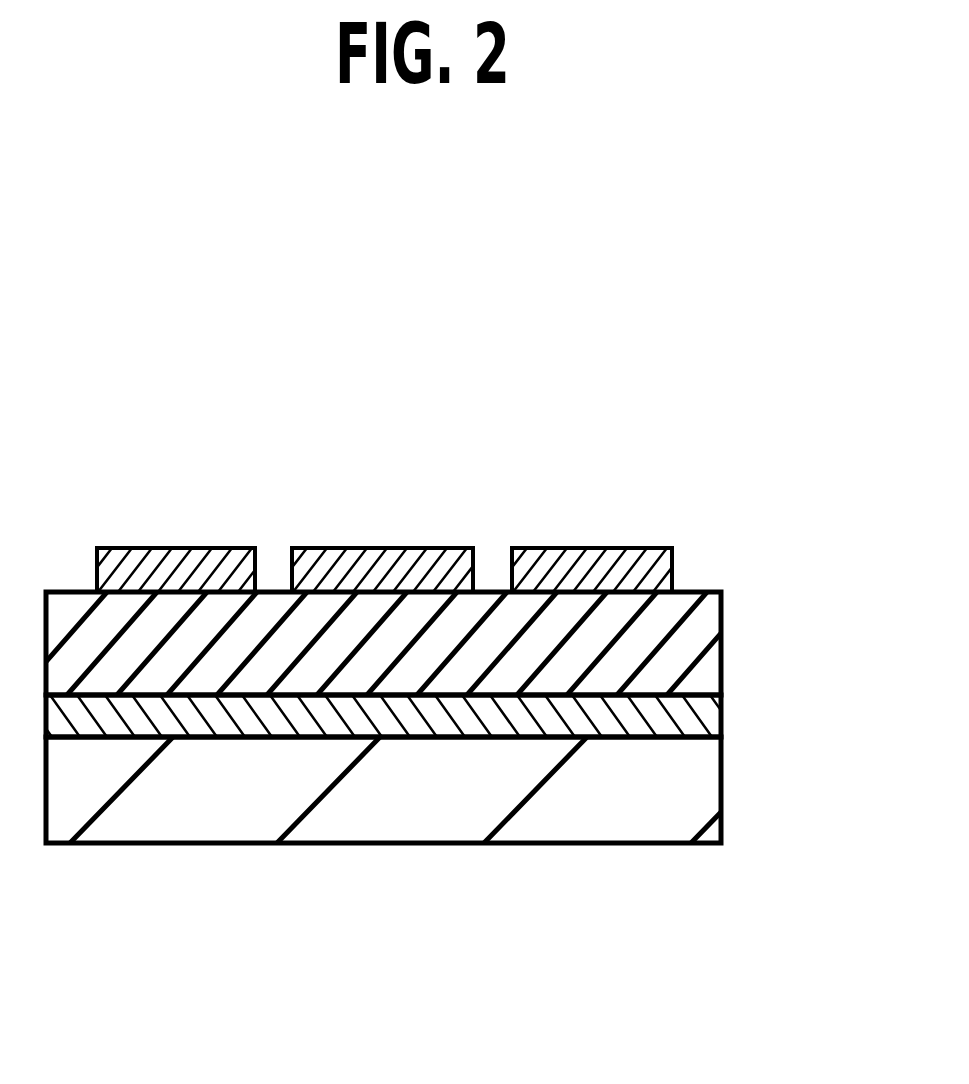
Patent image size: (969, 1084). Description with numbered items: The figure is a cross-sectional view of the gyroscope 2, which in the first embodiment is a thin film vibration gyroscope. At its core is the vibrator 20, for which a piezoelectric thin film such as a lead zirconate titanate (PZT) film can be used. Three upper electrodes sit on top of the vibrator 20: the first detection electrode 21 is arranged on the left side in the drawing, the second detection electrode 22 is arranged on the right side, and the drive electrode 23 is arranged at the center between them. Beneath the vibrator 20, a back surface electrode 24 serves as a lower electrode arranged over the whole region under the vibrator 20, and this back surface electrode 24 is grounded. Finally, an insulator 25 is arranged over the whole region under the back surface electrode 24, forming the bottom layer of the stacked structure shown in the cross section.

The gyroscope 2 is at (442, 375).
The vibrator 20 is at (722, 653).
The first detection electrode 21 is at (173, 548).
The second detection electrode 22 is at (589, 548).
The drive electrode 23 is at (374, 548).
The back surface electrode 24 is at (722, 722).
The insulator 25 is at (335, 846).